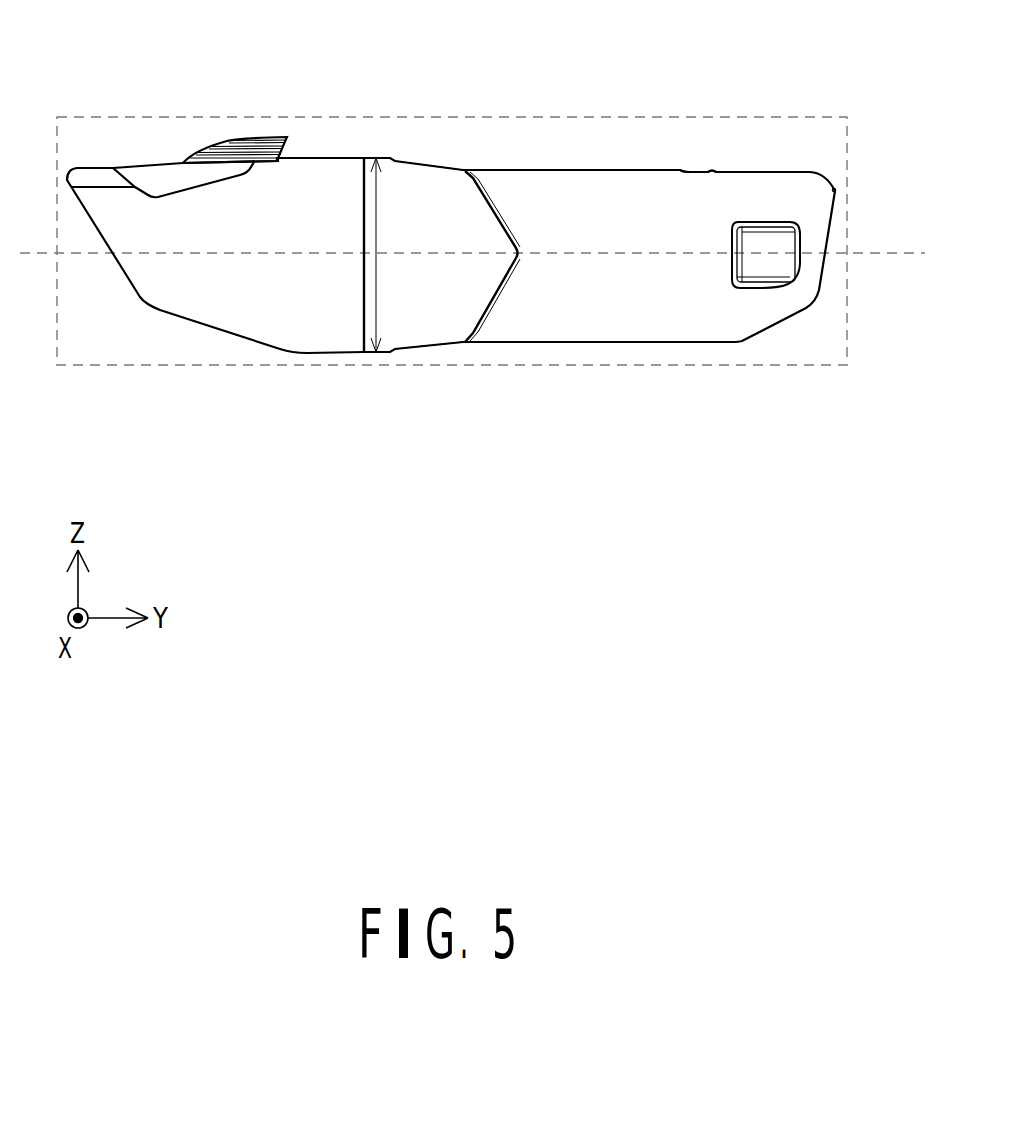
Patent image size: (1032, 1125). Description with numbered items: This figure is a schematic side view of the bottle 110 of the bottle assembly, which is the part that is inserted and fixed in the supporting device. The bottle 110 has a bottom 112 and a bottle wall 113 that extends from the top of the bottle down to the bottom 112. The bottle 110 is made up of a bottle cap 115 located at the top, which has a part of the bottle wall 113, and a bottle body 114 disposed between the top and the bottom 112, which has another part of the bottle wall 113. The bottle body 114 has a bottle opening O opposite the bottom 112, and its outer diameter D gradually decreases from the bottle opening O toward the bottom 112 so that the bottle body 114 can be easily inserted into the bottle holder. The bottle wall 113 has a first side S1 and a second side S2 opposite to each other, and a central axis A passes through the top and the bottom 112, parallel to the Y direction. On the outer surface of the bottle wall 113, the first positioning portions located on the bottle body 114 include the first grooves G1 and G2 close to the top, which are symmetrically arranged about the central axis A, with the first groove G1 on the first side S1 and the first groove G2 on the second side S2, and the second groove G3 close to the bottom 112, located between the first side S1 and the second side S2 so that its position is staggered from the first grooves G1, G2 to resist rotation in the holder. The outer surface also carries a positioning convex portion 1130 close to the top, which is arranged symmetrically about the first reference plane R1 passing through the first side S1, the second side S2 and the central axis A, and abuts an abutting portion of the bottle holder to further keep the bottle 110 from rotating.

The bottle 110 is at (83, 58).
The bottom 112 is at (833, 218).
The bottle wall 113 is at (662, 203).
The positioning convex portion 1130 is at (463, 207).
The bottle body 114 is at (685, 322).
The bottle cap 115 is at (253, 315).
The central axis A is at (873, 253).
The outer diameter D is at (382, 213).
The bottle opening O is at (358, 213).
The first groove G1 is at (430, 163).
The first groove G2 is at (430, 347).
The second groove G3 is at (760, 290).
The first reference plane R1 is at (760, 147).
The first side S1 is at (593, 167).
The second side S2 is at (593, 342).